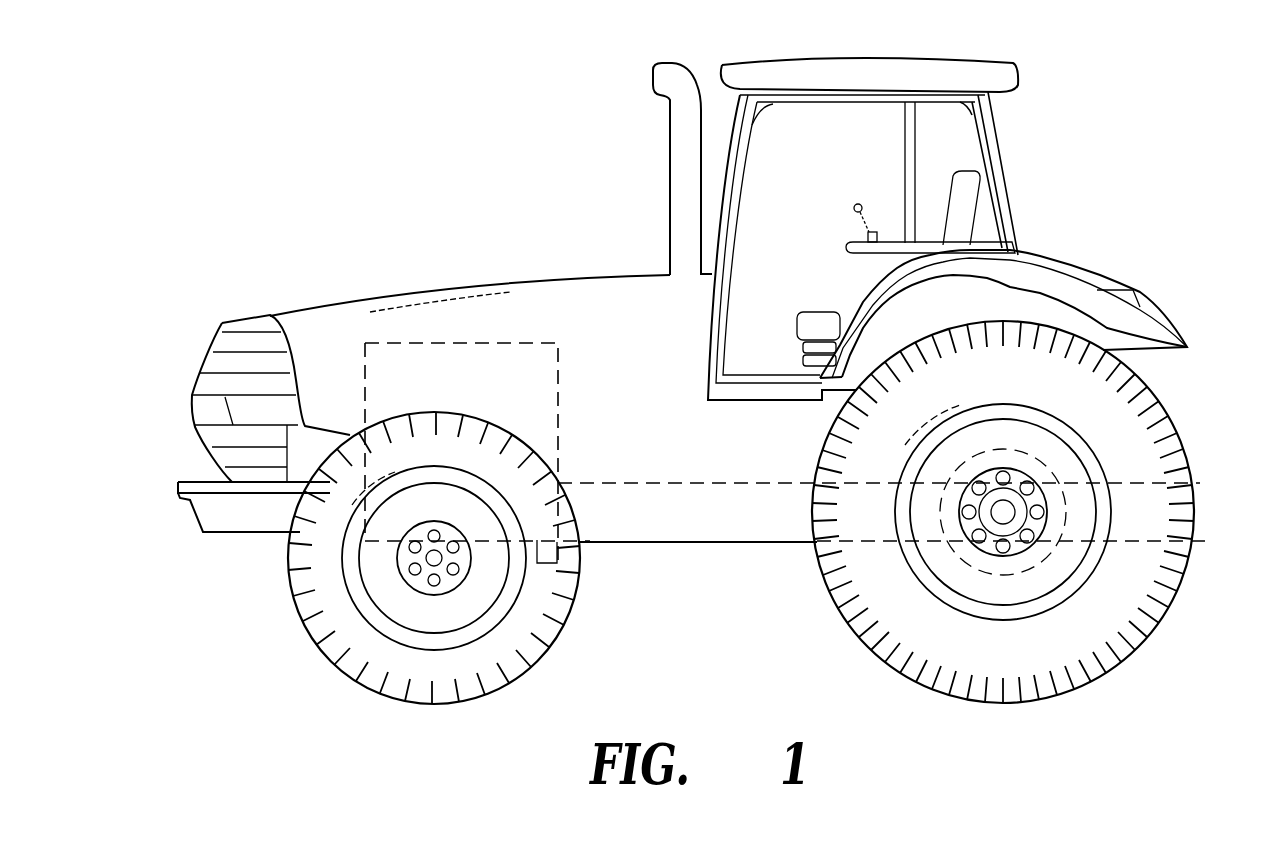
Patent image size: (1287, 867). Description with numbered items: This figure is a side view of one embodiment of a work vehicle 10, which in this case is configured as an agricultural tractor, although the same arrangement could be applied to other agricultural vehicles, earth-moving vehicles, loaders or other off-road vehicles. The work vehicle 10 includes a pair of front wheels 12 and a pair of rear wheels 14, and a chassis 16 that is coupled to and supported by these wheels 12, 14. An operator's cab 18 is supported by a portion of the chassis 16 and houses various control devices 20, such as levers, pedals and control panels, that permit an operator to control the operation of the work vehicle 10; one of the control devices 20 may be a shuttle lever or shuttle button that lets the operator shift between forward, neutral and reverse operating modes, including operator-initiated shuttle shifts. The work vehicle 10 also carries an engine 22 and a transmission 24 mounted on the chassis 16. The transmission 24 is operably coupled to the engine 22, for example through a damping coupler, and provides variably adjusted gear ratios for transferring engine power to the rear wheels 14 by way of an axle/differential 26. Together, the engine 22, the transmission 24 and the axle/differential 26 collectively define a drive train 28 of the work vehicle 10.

The work vehicle 10 is at (368, 185).
The front wheels 12 is at (292, 573).
The rear wheels 14 is at (1192, 542).
The chassis 16 is at (648, 542).
The operator's cab 18 is at (1013, 178).
The control devices 20 is at (855, 204).
The engine 22 is at (435, 343).
The transmission 24 is at (705, 478).
The axle/differential 26 is at (1045, 511).
The drive train 28 is at (612, 305).